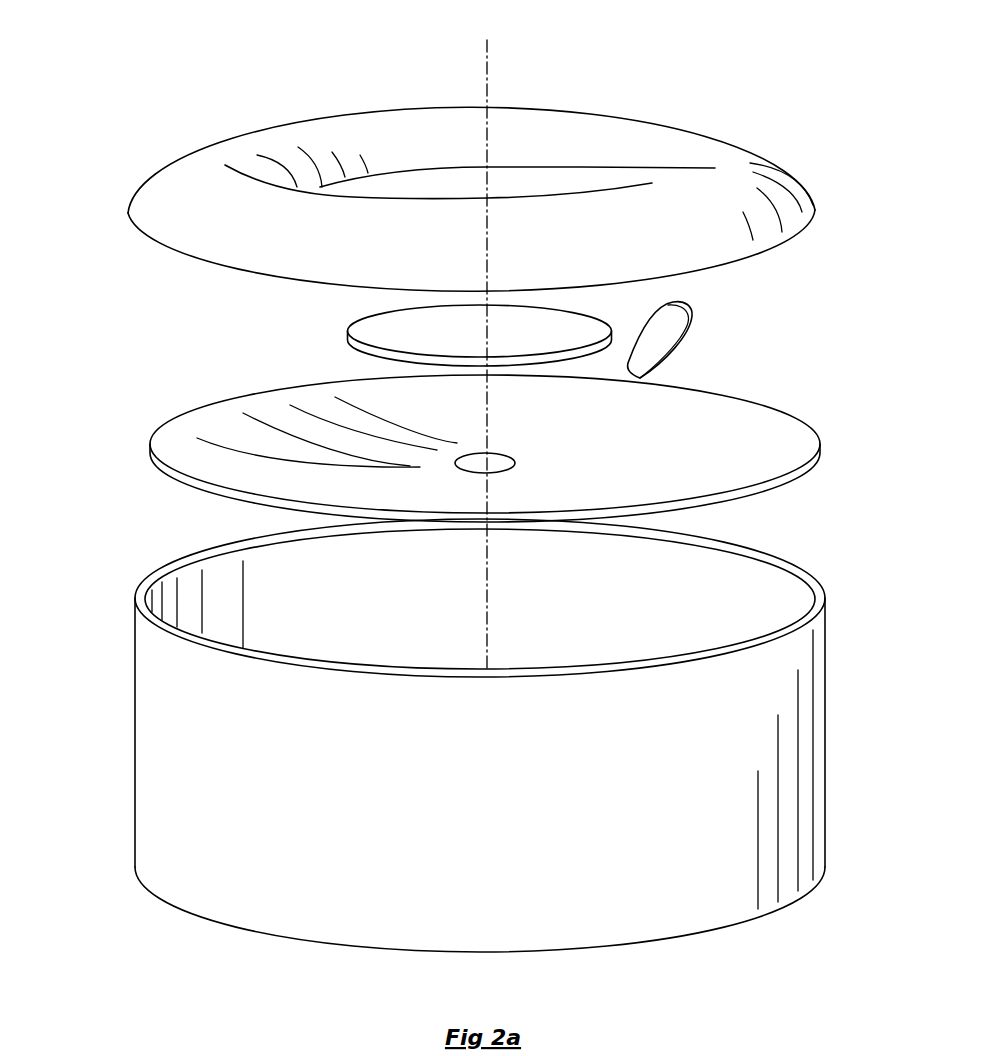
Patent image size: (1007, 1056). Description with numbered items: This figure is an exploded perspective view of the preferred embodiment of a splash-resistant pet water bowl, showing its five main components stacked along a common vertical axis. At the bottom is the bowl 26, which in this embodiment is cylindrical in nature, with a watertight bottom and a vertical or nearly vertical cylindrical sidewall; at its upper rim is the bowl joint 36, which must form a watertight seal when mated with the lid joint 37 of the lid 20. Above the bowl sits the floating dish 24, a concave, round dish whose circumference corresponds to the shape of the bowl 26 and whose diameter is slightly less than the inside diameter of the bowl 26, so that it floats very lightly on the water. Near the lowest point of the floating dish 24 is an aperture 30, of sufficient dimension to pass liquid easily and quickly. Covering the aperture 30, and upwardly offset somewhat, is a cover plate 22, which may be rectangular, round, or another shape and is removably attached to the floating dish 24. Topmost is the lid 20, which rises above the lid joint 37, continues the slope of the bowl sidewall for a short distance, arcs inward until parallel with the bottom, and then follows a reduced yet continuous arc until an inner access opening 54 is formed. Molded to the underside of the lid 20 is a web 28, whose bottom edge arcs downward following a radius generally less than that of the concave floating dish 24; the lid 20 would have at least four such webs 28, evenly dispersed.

The lid 20 is at (207, 183).
The inner access opening 54 is at (547, 185).
The lid joint 37 is at (815, 213).
The cover plate 22 is at (398, 333).
The web 28 is at (660, 328).
The floating dish 24 is at (225, 428).
The aperture 30 is at (518, 457).
The bowl 26 is at (188, 724).
The bowl joint 36 is at (808, 580).